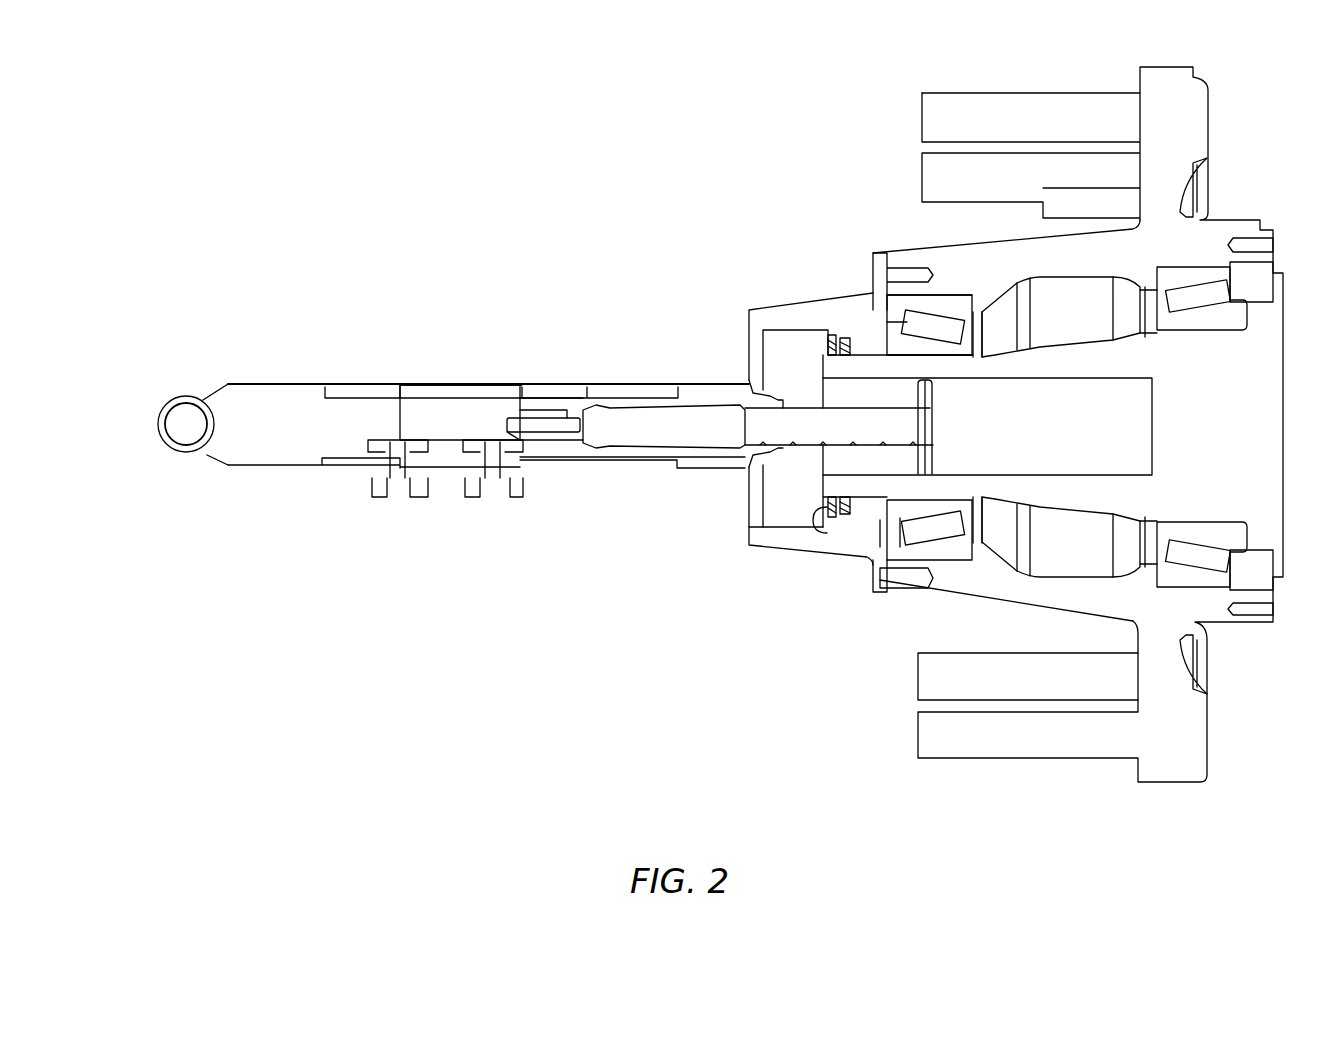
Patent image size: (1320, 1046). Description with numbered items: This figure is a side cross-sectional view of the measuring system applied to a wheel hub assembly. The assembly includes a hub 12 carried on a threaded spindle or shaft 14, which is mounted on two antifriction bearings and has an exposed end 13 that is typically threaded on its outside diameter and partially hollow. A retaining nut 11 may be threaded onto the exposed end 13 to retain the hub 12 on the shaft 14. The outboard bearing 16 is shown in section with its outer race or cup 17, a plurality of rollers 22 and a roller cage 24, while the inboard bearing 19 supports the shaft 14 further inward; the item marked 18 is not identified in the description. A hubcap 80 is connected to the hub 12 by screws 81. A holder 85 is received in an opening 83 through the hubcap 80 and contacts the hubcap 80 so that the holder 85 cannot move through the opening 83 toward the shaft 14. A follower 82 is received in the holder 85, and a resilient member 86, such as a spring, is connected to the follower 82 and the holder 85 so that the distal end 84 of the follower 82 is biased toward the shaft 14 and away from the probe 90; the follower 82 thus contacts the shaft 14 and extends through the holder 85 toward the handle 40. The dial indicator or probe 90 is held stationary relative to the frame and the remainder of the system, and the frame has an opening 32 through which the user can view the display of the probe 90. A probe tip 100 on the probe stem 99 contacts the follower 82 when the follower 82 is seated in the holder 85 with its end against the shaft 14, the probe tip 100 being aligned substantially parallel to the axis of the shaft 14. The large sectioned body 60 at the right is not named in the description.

The retaining nut 11 is at (857, 332).
The hub 12 is at (947, 593).
The exposed end 13 is at (930, 380).
The shaft 14 is at (987, 426).
The outboard bearing 16 is at (896, 283).
The outer race 17 is at (934, 427).
The bearing roller 18 is at (924, 348).
The inboard bearing 19 is at (1164, 597).
The rollers 22 is at (935, 325).
The roller cage 24 is at (982, 512).
The opening 32 is at (496, 368).
The handle 40 is at (158, 420).
The brake rotor 60 is at (973, 730).
The hubcap 80 is at (783, 541).
The screws 81 is at (903, 575).
The follower 82 is at (640, 420).
The opening 83 is at (738, 368).
The distal end 84 is at (930, 445).
The holder 85 is at (720, 452).
The resilient member 86 is at (758, 497).
The probe 90 is at (462, 416).
The probe stem 99 is at (558, 426).
The probe tip 100 is at (580, 420).